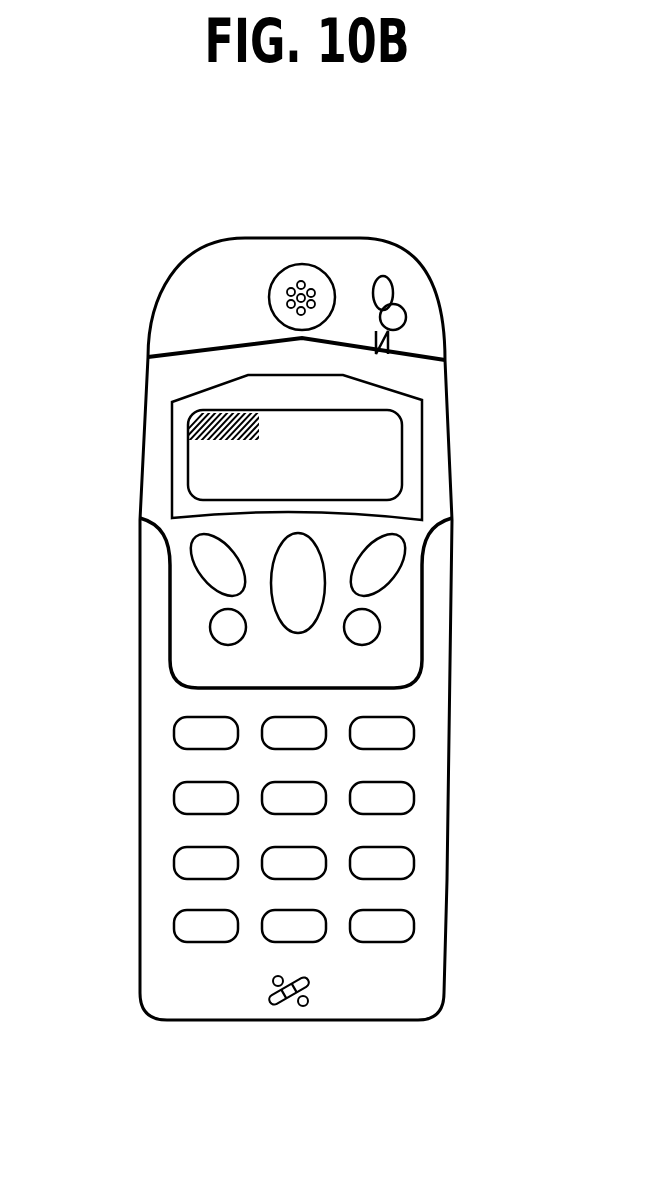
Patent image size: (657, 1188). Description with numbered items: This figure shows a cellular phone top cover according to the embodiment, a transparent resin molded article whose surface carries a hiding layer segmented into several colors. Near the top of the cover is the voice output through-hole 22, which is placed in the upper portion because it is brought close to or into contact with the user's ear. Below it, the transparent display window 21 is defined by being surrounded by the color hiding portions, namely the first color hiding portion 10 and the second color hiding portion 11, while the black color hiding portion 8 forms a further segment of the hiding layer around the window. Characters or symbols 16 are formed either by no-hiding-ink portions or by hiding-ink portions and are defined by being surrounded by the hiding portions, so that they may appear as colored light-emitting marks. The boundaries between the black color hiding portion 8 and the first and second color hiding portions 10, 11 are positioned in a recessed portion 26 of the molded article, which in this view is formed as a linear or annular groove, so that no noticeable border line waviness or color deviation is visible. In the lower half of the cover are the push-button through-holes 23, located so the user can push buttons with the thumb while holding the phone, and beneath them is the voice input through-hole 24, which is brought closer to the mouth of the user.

The first color hiding portion 10 is at (351, 288).
The second color hiding portion 11 is at (404, 372).
The voice output through-hole 22 is at (288, 291).
The characters or symbols 16 is at (404, 283).
The black color hiding portion 8 is at (413, 447).
The transparent display window 21 is at (342, 486).
The recessed portion 26 is at (173, 352).
The push-button through-holes 23 is at (363, 634).
The voice input through-hole 24 is at (288, 1005).